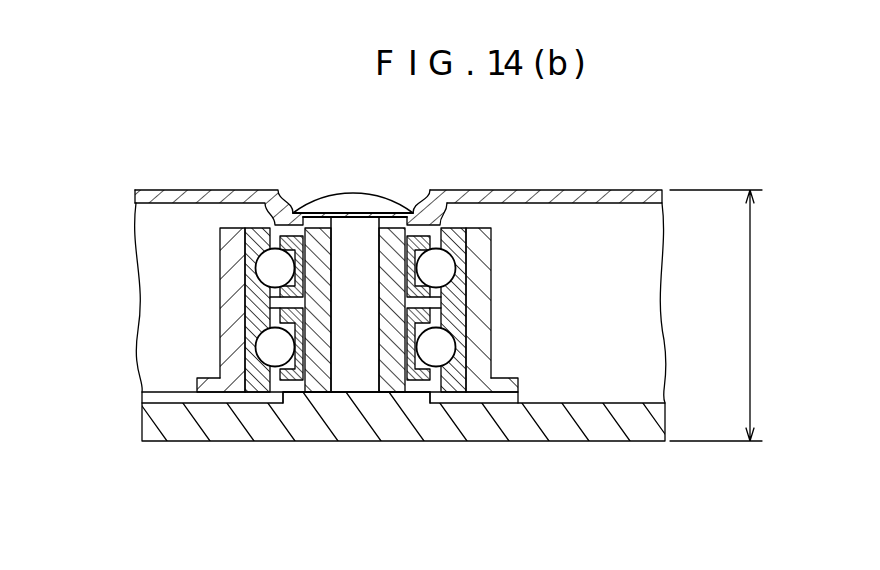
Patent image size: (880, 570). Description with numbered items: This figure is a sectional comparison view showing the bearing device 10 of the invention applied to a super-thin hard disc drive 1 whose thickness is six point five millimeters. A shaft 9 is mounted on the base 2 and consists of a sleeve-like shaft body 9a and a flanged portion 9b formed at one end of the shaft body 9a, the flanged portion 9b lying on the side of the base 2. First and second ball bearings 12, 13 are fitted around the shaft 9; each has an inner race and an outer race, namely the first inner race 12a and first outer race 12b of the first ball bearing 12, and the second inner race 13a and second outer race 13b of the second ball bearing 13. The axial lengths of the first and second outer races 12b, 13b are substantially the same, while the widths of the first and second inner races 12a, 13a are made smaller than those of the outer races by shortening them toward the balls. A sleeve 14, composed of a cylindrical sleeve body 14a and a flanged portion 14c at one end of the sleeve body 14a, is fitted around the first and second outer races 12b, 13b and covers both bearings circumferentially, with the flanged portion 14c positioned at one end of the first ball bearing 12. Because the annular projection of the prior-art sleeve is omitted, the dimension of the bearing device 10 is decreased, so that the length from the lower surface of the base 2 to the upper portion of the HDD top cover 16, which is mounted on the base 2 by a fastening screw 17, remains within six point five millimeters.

The hard disc drive 1 is at (717, 170).
The base 2 is at (611, 427).
The shaft 9 is at (412, 376).
The shaft body 9a is at (378, 358).
The flanged portion 9b is at (455, 385).
The bearing device 10 is at (158, 218).
The first ball bearing 12 is at (330, 471).
The first inner race 12a is at (297, 400).
The first outer race 12b is at (250, 400).
The second ball bearing 13 is at (273, 253).
The second inner race 13a is at (297, 226).
The second outer race 13b is at (255, 227).
The sleeve 14 is at (296, 288).
The sleeve body 14a is at (229, 311).
The flanged portion 14c is at (200, 387).
The HDD top cover 16 is at (547, 198).
The fastening screw 17 is at (367, 204).